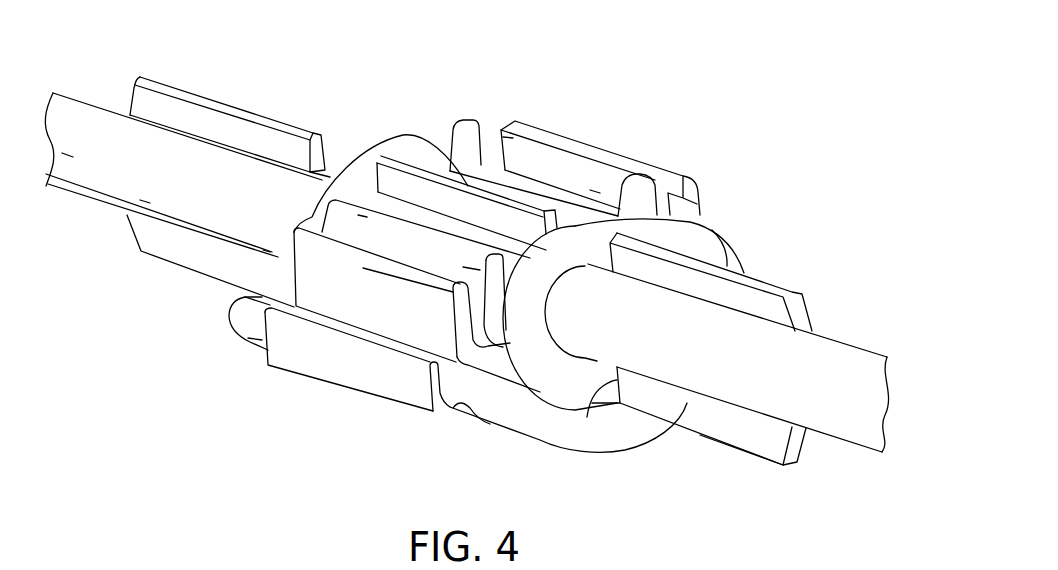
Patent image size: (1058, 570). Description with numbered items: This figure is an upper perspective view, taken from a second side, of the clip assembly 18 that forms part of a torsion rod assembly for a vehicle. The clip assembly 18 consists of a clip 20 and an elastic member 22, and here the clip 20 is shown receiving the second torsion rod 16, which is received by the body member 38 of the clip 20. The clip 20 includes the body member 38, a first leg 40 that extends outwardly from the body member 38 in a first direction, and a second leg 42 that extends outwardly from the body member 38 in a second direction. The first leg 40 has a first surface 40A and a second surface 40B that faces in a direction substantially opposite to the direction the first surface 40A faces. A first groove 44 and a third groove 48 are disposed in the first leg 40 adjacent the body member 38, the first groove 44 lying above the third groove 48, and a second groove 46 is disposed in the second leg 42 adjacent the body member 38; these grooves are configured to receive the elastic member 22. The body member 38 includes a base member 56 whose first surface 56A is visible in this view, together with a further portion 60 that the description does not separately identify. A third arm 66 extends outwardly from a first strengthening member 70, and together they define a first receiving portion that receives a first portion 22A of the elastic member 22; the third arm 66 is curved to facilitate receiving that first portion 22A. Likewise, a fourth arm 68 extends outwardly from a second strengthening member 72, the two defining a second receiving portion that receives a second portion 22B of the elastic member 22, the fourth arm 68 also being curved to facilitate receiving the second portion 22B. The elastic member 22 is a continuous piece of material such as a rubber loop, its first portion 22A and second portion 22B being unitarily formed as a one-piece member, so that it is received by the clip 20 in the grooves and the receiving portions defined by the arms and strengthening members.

The second torsion rod 16 is at (843, 342).
The clip assembly 18 is at (371, 95).
The clip 20 is at (645, 148).
The elastic member 22 is at (626, 460).
The first portion of the elastic member 22A is at (700, 230).
The second portion of the elastic member 22B is at (397, 345).
The body member 38 is at (456, 432).
The first leg 40 is at (734, 445).
The first surface of the first leg 40A is at (722, 293).
The second surface of the first leg 40B is at (174, 243).
The second leg 42 is at (203, 93).
The first groove 44 is at (549, 224).
The second groove 46 is at (318, 153).
The third groove 48 is at (613, 380).
The base member 56 is at (425, 172).
The first surface of the base member 56A is at (473, 217).
The housing block 60 is at (345, 217).
The third arm 66 is at (604, 147).
The fourth arm 68 is at (367, 378).
The first strengthening member 70 is at (553, 165).
The second strengthening member 72 is at (323, 270).